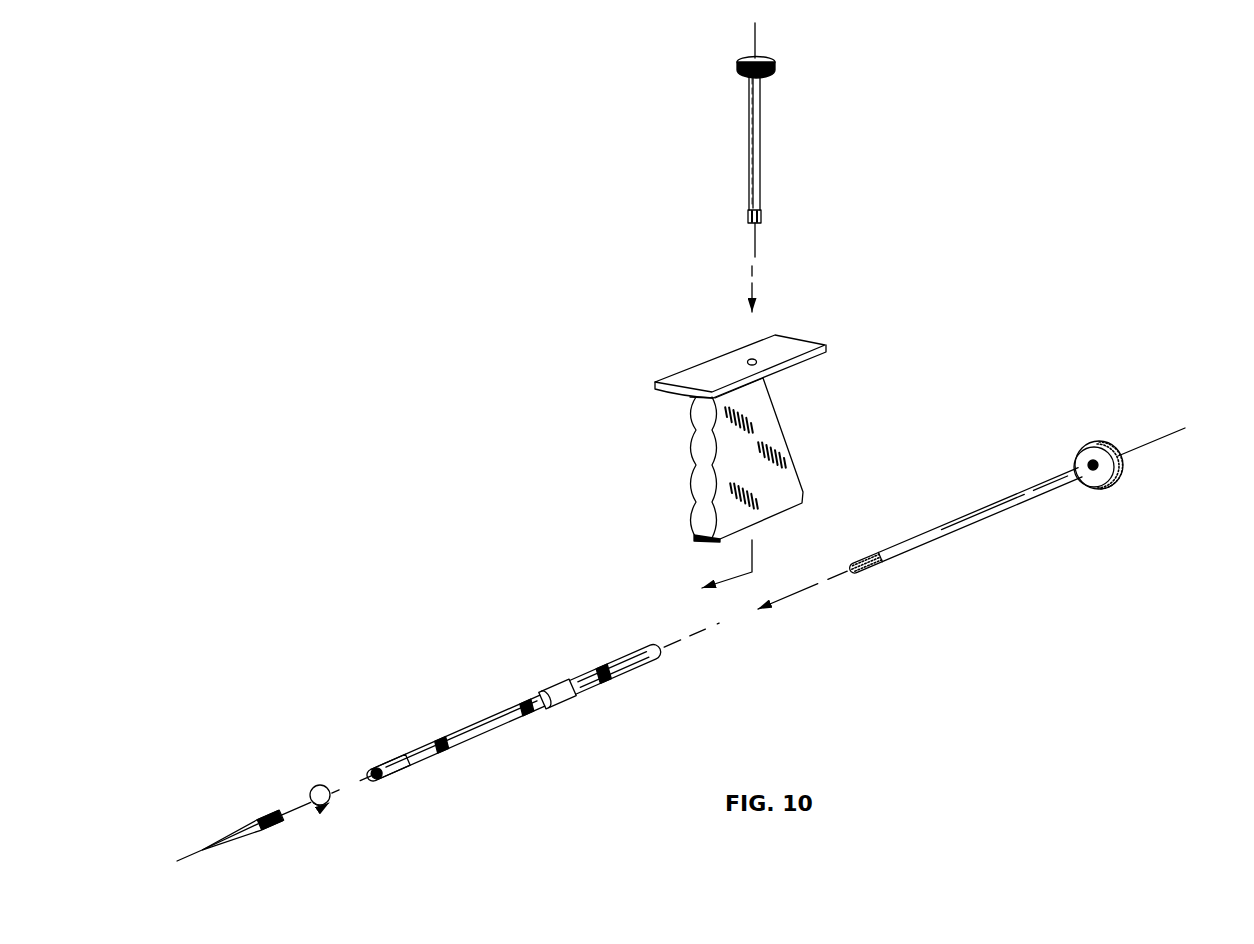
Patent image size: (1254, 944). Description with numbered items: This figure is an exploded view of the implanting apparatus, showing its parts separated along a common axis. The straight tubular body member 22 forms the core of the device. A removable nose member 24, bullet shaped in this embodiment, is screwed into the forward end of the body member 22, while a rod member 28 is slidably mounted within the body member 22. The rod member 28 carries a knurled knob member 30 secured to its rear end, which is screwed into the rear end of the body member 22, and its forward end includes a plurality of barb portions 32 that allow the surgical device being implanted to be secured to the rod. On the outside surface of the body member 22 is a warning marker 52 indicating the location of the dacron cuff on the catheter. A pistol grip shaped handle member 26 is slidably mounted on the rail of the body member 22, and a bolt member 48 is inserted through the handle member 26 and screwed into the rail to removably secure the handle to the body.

The bolt member 48 is at (762, 160).
The handle member 26 is at (787, 430).
The rod member 28 is at (997, 517).
The barb portions 32 is at (868, 552).
The knurled knob member 30 is at (1110, 440).
The nose member 24 is at (228, 827).
The tubular body member 22 is at (483, 737).
The warning marker 52 is at (407, 763).